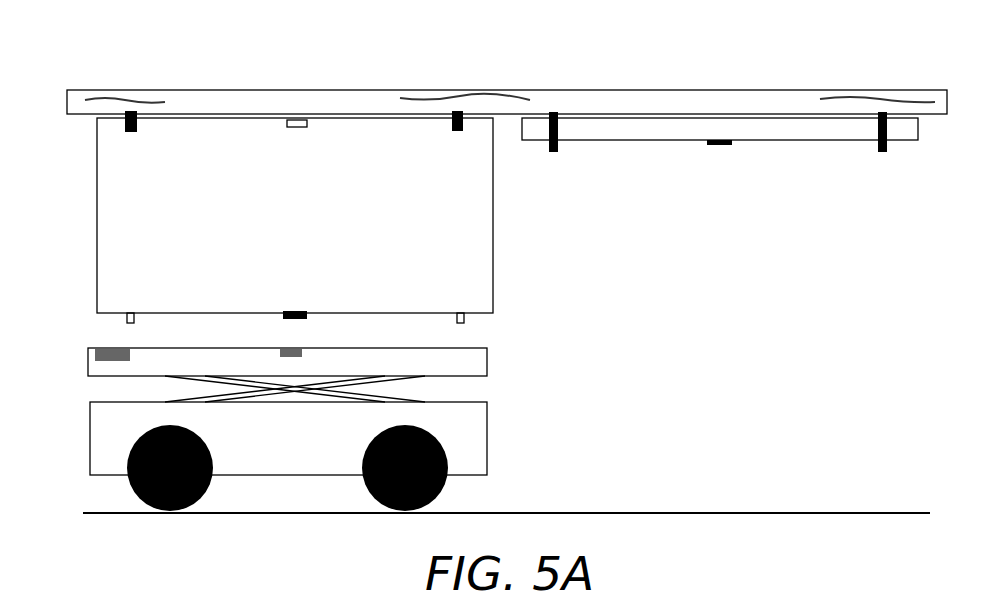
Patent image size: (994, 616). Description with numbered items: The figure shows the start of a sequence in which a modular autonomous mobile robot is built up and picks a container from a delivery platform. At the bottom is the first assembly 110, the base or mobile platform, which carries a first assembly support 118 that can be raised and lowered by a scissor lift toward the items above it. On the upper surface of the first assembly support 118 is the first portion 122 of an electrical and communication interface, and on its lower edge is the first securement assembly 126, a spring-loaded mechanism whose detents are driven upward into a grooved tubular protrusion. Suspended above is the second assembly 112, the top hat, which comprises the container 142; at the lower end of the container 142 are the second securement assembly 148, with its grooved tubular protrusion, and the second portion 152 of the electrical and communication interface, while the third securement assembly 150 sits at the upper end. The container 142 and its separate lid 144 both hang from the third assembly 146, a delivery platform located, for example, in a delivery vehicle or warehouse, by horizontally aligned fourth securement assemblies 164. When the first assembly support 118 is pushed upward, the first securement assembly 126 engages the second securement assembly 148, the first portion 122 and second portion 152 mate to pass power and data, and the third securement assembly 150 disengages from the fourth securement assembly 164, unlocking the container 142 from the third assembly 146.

The first assembly 110 is at (485, 430).
The second assembly 112 is at (493, 263).
The first assembly support 118 is at (475, 360).
The first portion of an electrical and communication interface 122 is at (295, 352).
The first securement assembly 126 is at (127, 357).
The container 142 is at (295, 215).
The lid 144 is at (807, 139).
The third assembly 146 is at (300, 100).
The second securement assembly 148 is at (127, 315).
The third securement assembly 150 is at (132, 125).
The second portion of an electrical and communication interface 152 is at (297, 310).
The fourth securement assembly 164 is at (457, 112).